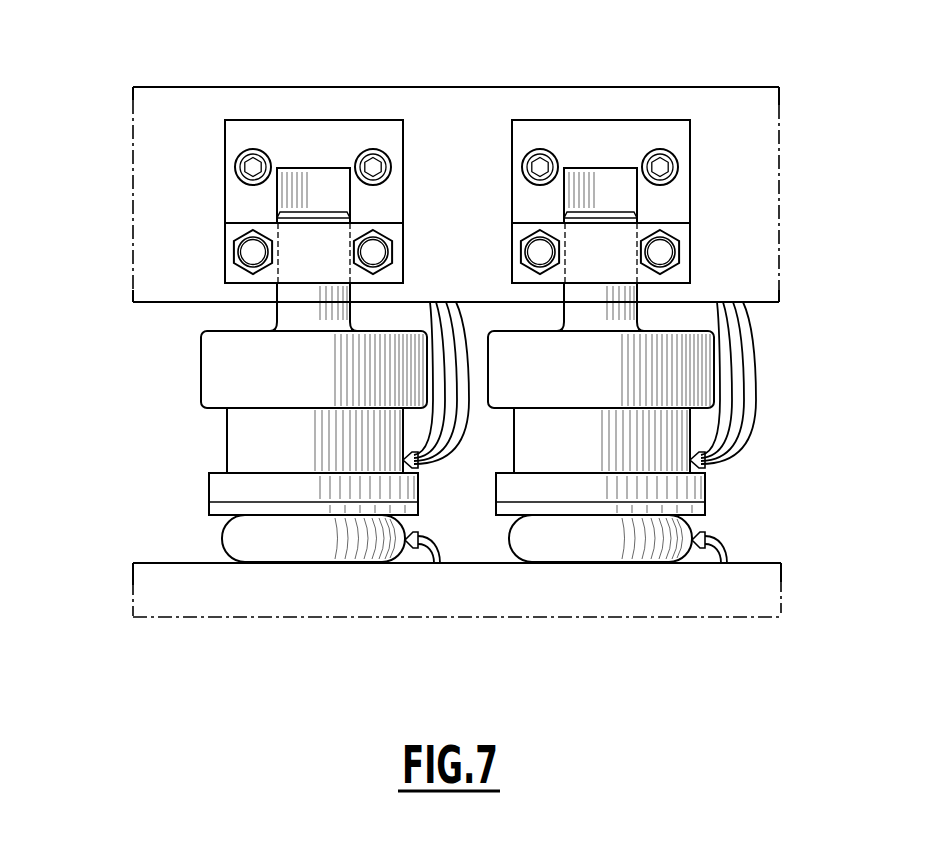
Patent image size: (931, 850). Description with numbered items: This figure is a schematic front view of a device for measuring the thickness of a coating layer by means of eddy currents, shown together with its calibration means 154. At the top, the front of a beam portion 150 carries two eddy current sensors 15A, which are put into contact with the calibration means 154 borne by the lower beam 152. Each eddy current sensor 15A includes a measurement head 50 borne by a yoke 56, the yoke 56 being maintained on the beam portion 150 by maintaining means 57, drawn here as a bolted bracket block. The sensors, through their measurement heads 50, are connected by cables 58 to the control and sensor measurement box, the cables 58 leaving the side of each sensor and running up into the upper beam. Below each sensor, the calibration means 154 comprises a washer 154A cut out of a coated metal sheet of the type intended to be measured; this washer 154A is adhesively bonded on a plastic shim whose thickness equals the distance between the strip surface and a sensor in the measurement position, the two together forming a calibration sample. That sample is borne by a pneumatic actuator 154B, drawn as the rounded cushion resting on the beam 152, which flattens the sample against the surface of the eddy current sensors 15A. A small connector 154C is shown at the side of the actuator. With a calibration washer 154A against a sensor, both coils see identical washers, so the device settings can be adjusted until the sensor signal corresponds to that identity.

The beam portion 150 is at (442, 122).
The beam 152 is at (277, 597).
The maintaining means 57 is at (309, 137).
The eddy current sensor 15A is at (257, 385).
The yoke 56 is at (202, 362).
The measurement head 50 is at (226, 437).
The cables 58 is at (465, 338).
The calibration means 154 is at (269, 580).
The washer 154A is at (212, 508).
The pneumatic actuator 154B is at (237, 548).
The pad connector 154C is at (430, 557).